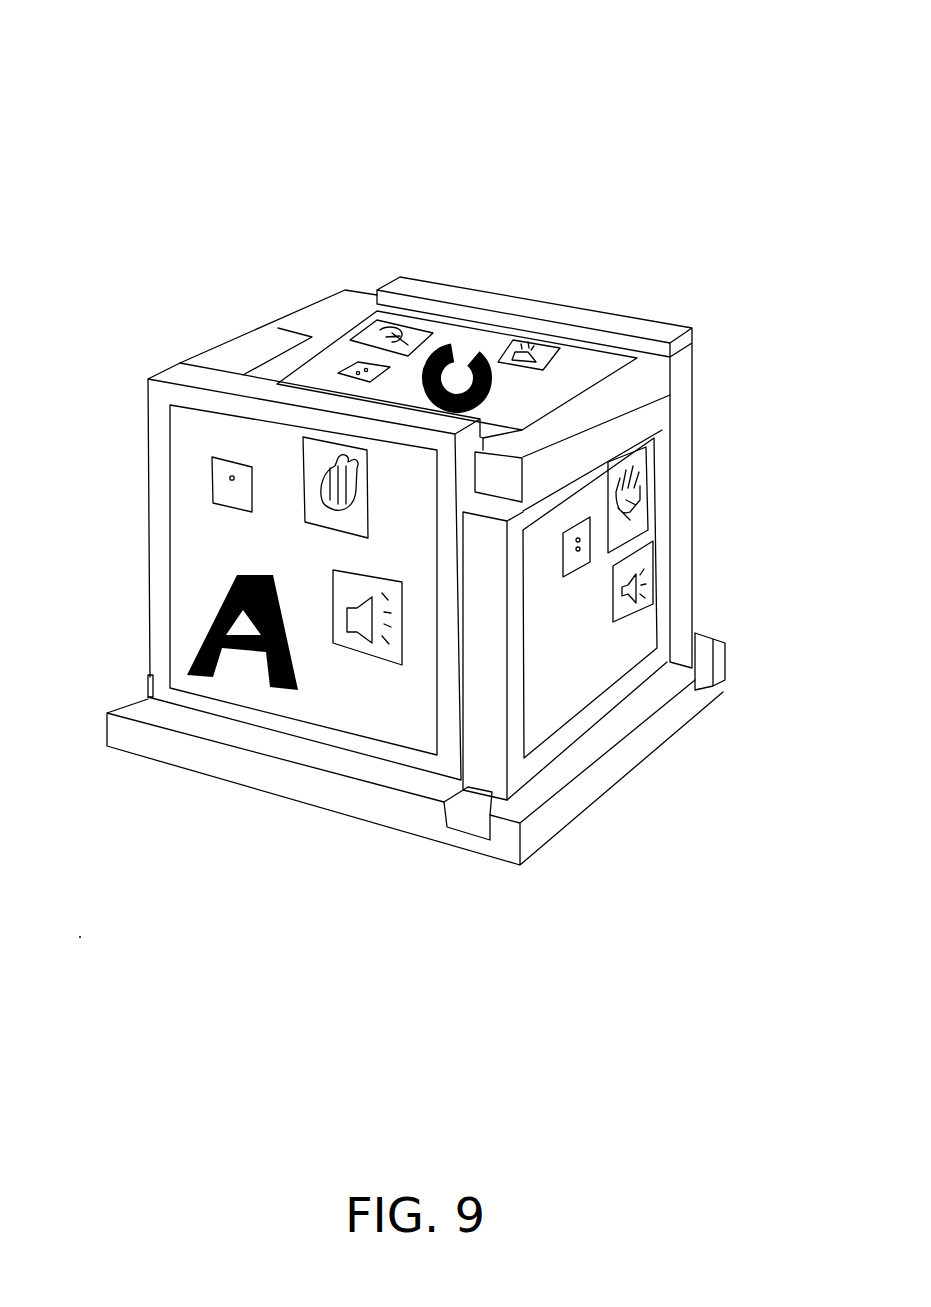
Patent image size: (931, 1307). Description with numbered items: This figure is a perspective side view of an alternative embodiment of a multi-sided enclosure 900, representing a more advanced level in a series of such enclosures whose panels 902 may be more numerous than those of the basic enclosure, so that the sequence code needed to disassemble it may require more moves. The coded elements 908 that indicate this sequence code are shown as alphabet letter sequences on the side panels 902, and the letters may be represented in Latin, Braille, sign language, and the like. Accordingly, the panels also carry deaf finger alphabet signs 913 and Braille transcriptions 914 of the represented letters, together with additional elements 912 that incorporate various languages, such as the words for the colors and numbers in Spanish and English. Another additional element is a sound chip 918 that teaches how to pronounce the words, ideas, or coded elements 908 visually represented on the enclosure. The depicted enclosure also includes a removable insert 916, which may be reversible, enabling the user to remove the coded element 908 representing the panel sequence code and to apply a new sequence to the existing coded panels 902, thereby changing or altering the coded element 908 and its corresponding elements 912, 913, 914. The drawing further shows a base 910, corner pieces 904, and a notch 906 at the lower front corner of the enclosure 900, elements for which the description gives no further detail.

The multi-sided enclosure 900 is at (76, 80).
The panels 902 is at (178, 376).
The corner piece 904 is at (678, 371).
The notch 906 is at (492, 797).
The coded elements 908 is at (496, 338).
The base 910 is at (133, 698).
The additional elements 912 is at (333, 692).
The deaf finger alphabet signs 913 is at (375, 525).
The Braille transcriptions 914 is at (228, 508).
The removable insert 916 is at (655, 330).
The sound chip 918 is at (335, 587).